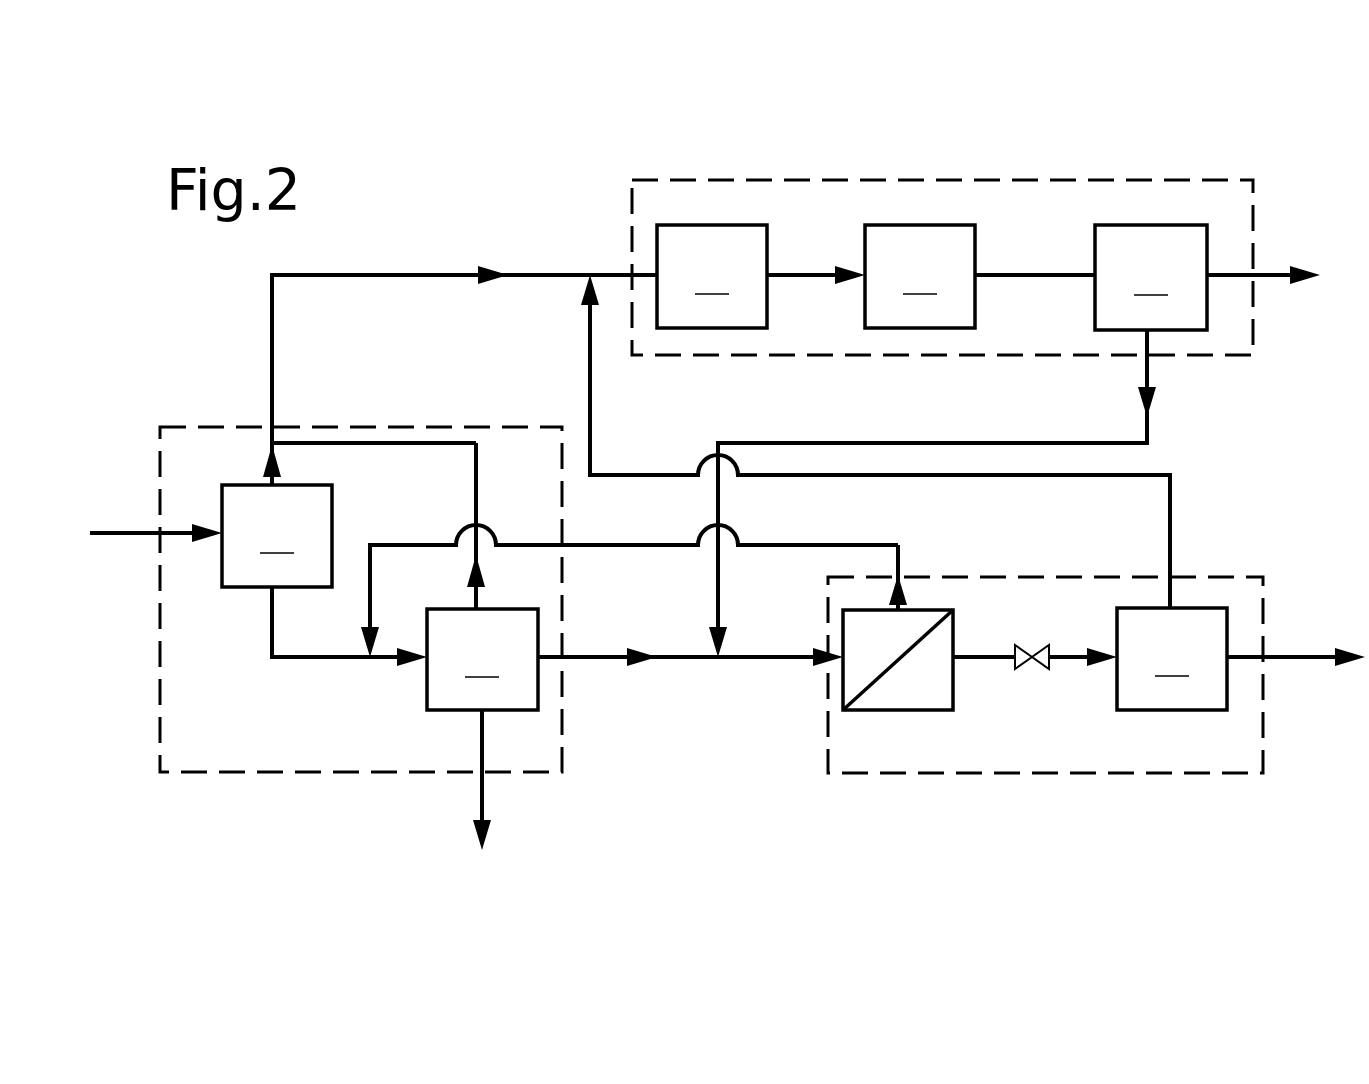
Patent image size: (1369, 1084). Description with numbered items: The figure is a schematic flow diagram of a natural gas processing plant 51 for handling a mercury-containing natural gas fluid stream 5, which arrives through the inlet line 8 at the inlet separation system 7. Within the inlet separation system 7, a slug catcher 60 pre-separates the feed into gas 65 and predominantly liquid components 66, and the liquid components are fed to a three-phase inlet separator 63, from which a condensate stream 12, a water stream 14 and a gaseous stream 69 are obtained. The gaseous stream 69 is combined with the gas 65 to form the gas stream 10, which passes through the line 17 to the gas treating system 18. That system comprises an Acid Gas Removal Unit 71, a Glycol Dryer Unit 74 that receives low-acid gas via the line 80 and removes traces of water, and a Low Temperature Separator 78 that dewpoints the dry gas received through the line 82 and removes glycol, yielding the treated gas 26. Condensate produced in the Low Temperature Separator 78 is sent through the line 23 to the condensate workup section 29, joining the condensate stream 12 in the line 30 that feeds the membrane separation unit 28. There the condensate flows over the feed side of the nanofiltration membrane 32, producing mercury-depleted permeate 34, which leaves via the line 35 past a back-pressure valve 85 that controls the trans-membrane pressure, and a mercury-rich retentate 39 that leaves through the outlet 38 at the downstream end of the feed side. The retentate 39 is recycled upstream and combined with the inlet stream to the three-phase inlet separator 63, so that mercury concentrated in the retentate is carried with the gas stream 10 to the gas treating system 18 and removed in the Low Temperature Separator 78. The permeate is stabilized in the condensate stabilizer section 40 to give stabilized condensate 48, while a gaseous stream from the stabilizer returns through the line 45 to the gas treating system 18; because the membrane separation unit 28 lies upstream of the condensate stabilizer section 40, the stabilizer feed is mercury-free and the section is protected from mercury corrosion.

The natural gas fluid stream 5 is at (90, 535).
The inlet separation system 7 is at (250, 775).
The inlet line 8 is at (142, 528).
The gas stream 10 is at (276, 393).
The condensate stream 12 is at (575, 662).
The water stream 14 is at (484, 795).
The line 17 is at (276, 322).
The gas treating system 18 is at (630, 215).
The line 23 is at (1150, 372).
The treated gas 26 is at (1265, 282).
The membrane separation unit 28 is at (927, 712).
The condensate workup section 29 is at (920, 775).
The line 30 is at (770, 660).
The nanofiltration membrane 32 is at (918, 643).
The permeate 34 is at (970, 663).
The line 35 is at (1067, 663).
The outlet 38 is at (902, 555).
The retentate 39 is at (808, 541).
The condensate stabilizer section 40 is at (1172, 659).
The line 45 is at (1172, 515).
The stabilized condensate 48 is at (1290, 662).
The plant 51 is at (222, 377).
The slug catcher 60 is at (277, 536).
The three-phase inlet separator 63 is at (482, 659).
The gas 65 is at (282, 476).
The predominantly liquid components 66 is at (268, 608).
The gaseous stream 69 is at (480, 594).
The Acid Gas Removal Unit 71 is at (712, 276).
The Glycol Dryer Unit 74 is at (920, 276).
The Low Temperature Separator 78 is at (1151, 277).
The line 80 is at (790, 270).
The line 82 is at (1028, 270).
The back-pressure valve 85 is at (1033, 645).